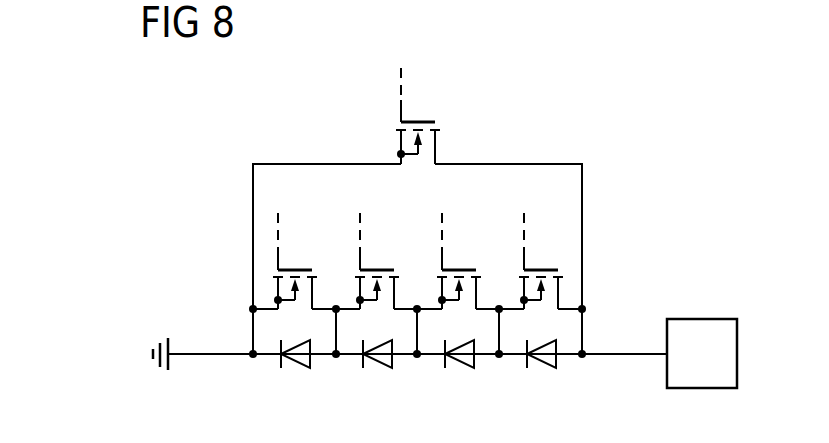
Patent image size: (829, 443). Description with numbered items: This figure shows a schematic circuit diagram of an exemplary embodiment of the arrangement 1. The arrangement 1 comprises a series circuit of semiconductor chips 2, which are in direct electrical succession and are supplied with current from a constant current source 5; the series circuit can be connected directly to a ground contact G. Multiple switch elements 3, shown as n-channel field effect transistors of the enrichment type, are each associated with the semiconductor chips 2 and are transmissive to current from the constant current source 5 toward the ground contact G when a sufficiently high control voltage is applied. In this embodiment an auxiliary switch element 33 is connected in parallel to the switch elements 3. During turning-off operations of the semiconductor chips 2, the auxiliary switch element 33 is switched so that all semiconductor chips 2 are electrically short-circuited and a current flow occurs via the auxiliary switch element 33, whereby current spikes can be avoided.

The arrangement 1 is at (668, 95).
The semiconductor chip 2 is at (540, 363).
The switch element 3 is at (541, 268).
The constant current source 5 is at (702, 318).
The auxiliary switch element 33 is at (418, 120).
The ground contact G is at (156, 342).